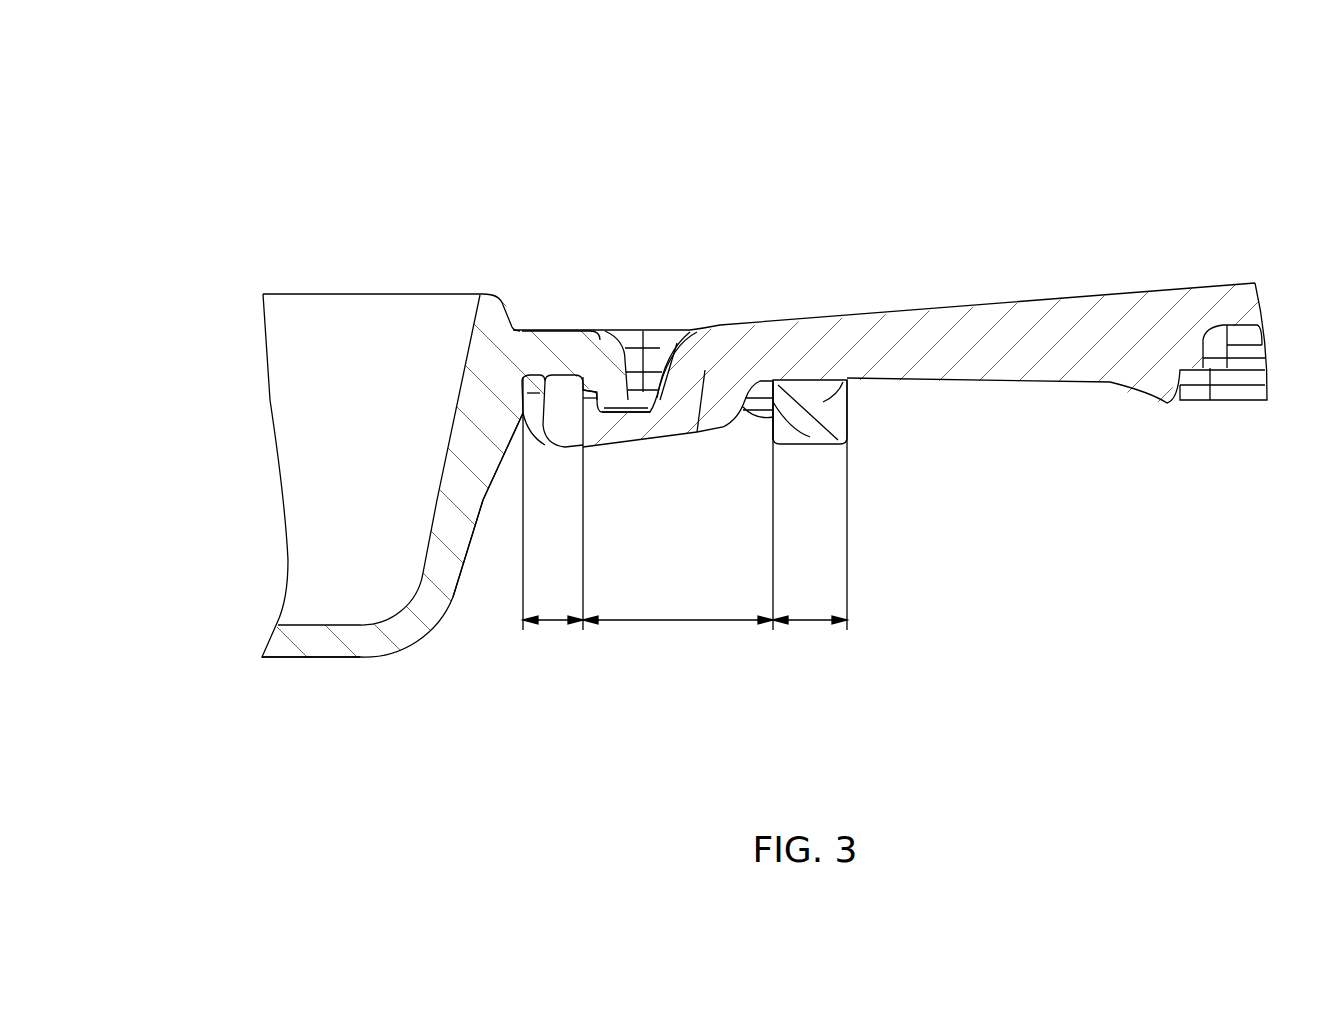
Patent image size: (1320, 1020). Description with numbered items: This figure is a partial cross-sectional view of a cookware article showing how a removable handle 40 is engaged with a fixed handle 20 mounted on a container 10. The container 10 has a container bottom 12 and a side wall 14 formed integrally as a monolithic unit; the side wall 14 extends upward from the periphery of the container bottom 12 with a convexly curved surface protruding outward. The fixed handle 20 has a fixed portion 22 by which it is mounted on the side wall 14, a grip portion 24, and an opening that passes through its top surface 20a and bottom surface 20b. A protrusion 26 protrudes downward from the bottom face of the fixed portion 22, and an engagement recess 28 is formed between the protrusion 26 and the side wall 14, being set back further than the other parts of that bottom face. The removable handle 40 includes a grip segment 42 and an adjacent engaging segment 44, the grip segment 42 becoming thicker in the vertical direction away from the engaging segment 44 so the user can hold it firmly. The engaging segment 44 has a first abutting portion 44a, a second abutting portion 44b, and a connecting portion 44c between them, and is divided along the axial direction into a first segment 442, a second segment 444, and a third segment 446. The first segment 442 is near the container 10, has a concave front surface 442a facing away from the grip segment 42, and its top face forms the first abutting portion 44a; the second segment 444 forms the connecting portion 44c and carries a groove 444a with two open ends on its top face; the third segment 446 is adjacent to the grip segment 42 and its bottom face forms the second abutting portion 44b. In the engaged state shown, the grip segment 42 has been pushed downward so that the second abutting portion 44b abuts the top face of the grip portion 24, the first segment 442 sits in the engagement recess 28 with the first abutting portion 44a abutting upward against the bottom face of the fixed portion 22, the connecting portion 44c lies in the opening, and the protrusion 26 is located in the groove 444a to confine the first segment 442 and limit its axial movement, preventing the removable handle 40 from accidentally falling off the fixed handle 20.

The container 10 is at (352, 292).
The container bottom 12 is at (322, 658).
The side wall 14 is at (450, 600).
The fixed handle 20 is at (523, 327).
The top surface 20a is at (592, 328).
The bottom surface 20b is at (757, 420).
The fixed portion 22 is at (565, 350).
The grip portion 24 is at (823, 402).
The protrusion 26 is at (610, 388).
The engagement recess 28 is at (517, 427).
The removable handle 40 is at (890, 256).
The grip segment 42 is at (1103, 310).
The engaging segment 44 is at (787, 307).
The first abutting portion 44a is at (553, 373).
The second abutting portion 44b is at (810, 378).
The connecting portion 44c is at (707, 367).
The first segment 442 is at (553, 503).
The front surface 442a is at (530, 393).
The second segment 444 is at (678, 506).
The groove 444a is at (660, 360).
The third segment 446 is at (810, 505).